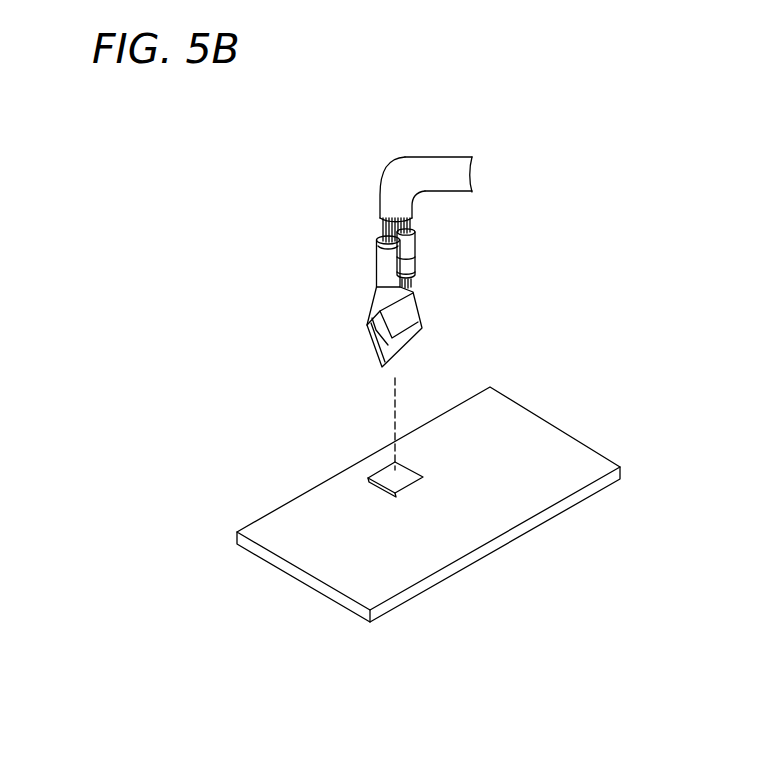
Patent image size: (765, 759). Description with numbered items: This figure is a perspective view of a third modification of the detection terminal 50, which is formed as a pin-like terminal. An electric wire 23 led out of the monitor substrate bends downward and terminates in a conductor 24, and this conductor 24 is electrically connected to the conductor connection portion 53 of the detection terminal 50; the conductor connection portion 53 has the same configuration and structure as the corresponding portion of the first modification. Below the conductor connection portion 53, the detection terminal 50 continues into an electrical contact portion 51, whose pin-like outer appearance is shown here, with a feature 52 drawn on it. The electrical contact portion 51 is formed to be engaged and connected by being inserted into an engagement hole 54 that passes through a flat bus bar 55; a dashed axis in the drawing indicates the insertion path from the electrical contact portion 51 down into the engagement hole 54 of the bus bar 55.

The electric wire 23 is at (440, 157).
The conductor 24 is at (382, 227).
The detection terminal 50 is at (275, 278).
The electrical contact portion 51 is at (422, 319).
The protrusion 52 is at (370, 337).
The conductor connection portion 53 is at (415, 250).
The engagement hole 54 is at (384, 479).
The bus bar 55 is at (542, 437).